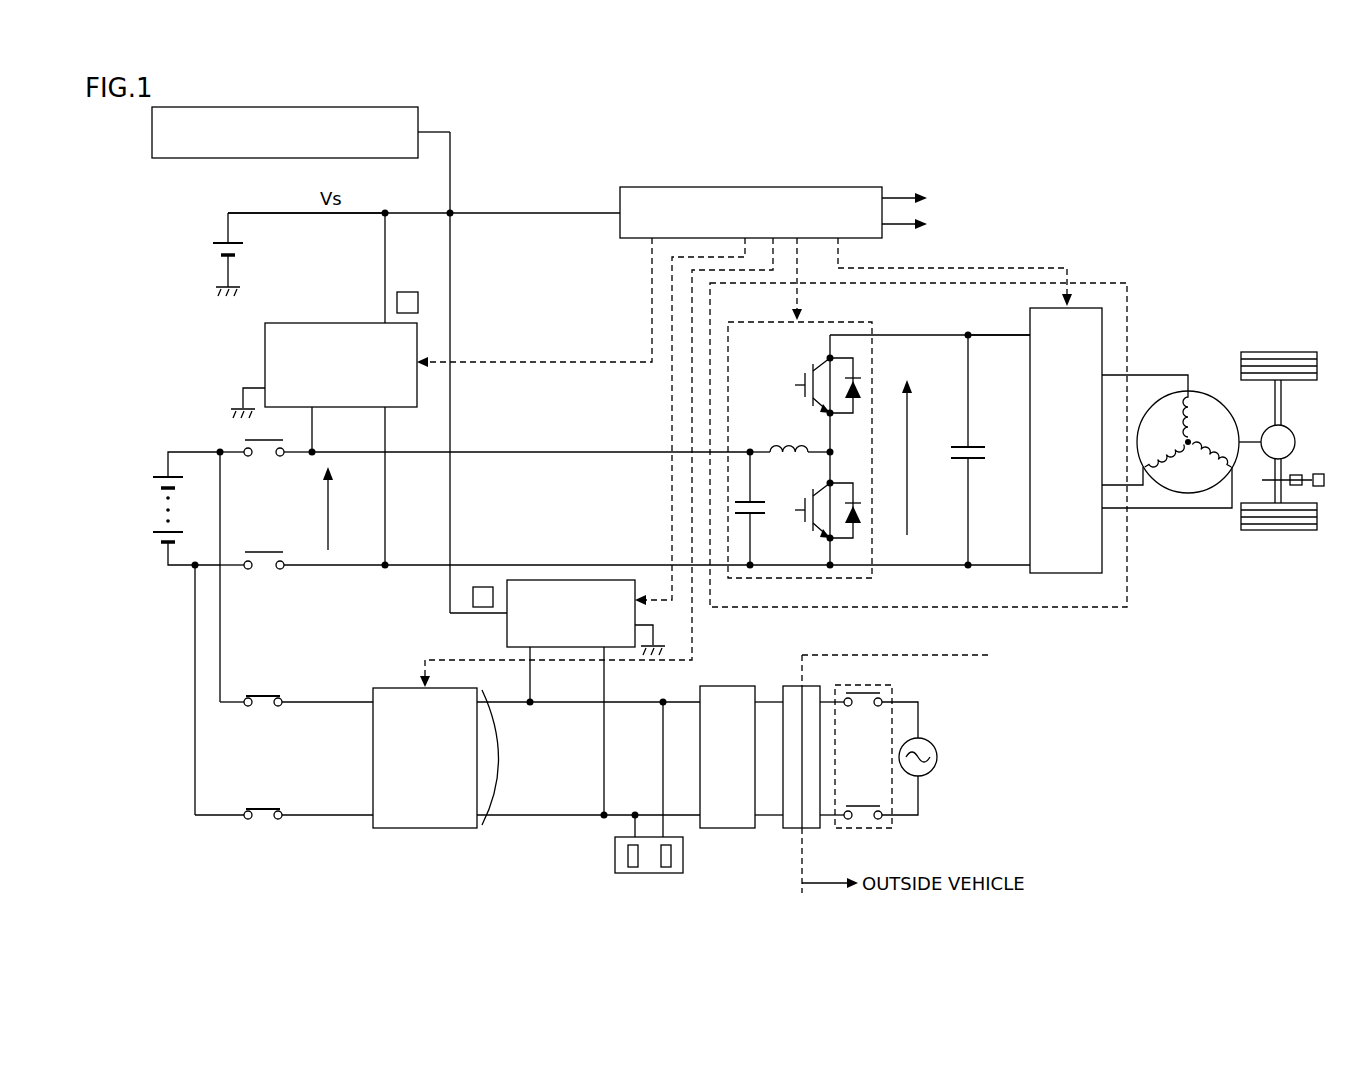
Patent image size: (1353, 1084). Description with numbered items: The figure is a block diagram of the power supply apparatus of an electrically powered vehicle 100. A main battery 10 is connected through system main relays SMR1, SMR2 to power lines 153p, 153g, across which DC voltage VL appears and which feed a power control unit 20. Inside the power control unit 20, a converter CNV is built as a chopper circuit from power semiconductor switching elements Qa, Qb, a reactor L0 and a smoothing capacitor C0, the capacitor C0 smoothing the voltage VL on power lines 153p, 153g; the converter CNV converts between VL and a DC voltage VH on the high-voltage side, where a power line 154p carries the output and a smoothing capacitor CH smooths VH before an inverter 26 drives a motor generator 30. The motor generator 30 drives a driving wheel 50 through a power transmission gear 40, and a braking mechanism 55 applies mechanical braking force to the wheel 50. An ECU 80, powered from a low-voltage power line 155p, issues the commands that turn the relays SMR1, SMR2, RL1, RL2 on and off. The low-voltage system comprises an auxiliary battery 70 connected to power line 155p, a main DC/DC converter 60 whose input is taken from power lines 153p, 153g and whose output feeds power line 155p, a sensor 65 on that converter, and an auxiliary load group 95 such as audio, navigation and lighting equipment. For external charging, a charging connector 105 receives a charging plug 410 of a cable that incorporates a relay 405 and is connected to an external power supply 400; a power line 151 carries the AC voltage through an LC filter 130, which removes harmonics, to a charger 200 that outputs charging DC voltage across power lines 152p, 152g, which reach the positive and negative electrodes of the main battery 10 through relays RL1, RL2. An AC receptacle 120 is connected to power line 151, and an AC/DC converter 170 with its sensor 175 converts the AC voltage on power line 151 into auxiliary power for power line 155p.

The main battery 10 is at (163, 510).
The power control unit 20 is at (1130, 586).
The inverter 26 is at (1082, 310).
The motor generator 30 is at (1207, 392).
The power transmission gear 40 is at (1294, 432).
The driving wheel 50 is at (1293, 352).
The braking mechanism 55 is at (1316, 468).
The main DC/DC converter 60 is at (265, 353).
The sensor 65 is at (407, 292).
The auxiliary battery 70 is at (215, 251).
The ECU 80 is at (865, 187).
The auxiliary load group 95 is at (152, 136).
The electrically powered vehicle 100 is at (1150, 250).
The charging connector 105 is at (788, 686).
The AC receptacle 120 is at (685, 855).
The LC filter 130 is at (732, 686).
The power line 151 is at (490, 832).
The power line 152p is at (318, 702).
The power line 152g is at (318, 818).
The power line 153p is at (485, 451).
The power line 153g is at (485, 564).
The power line 154p is at (1005, 335).
The power line 155p is at (285, 213).
The AC/DC converter 170 is at (507, 632).
The sensor 175 is at (473, 598).
The charger 200 is at (393, 828).
The external power supply 400 is at (940, 758).
The relay 405 is at (880, 830).
The charging plug 410 is at (815, 829).
The system main relay SMR1 is at (262, 458).
The system main relay SMR2 is at (262, 571).
The relay RL1 is at (264, 693).
The relay RL2 is at (264, 806).
The converter CNV is at (840, 320).
The power semiconductor switching element Qa is at (797, 386).
The power semiconductor switching element Qb is at (803, 522).
The reactor L0 is at (791, 441).
The smoothing capacitor C0 is at (760, 502).
The smoothing capacitor CH is at (985, 447).
The DC voltage VL is at (341, 508).
The DC voltage VH is at (921, 457).